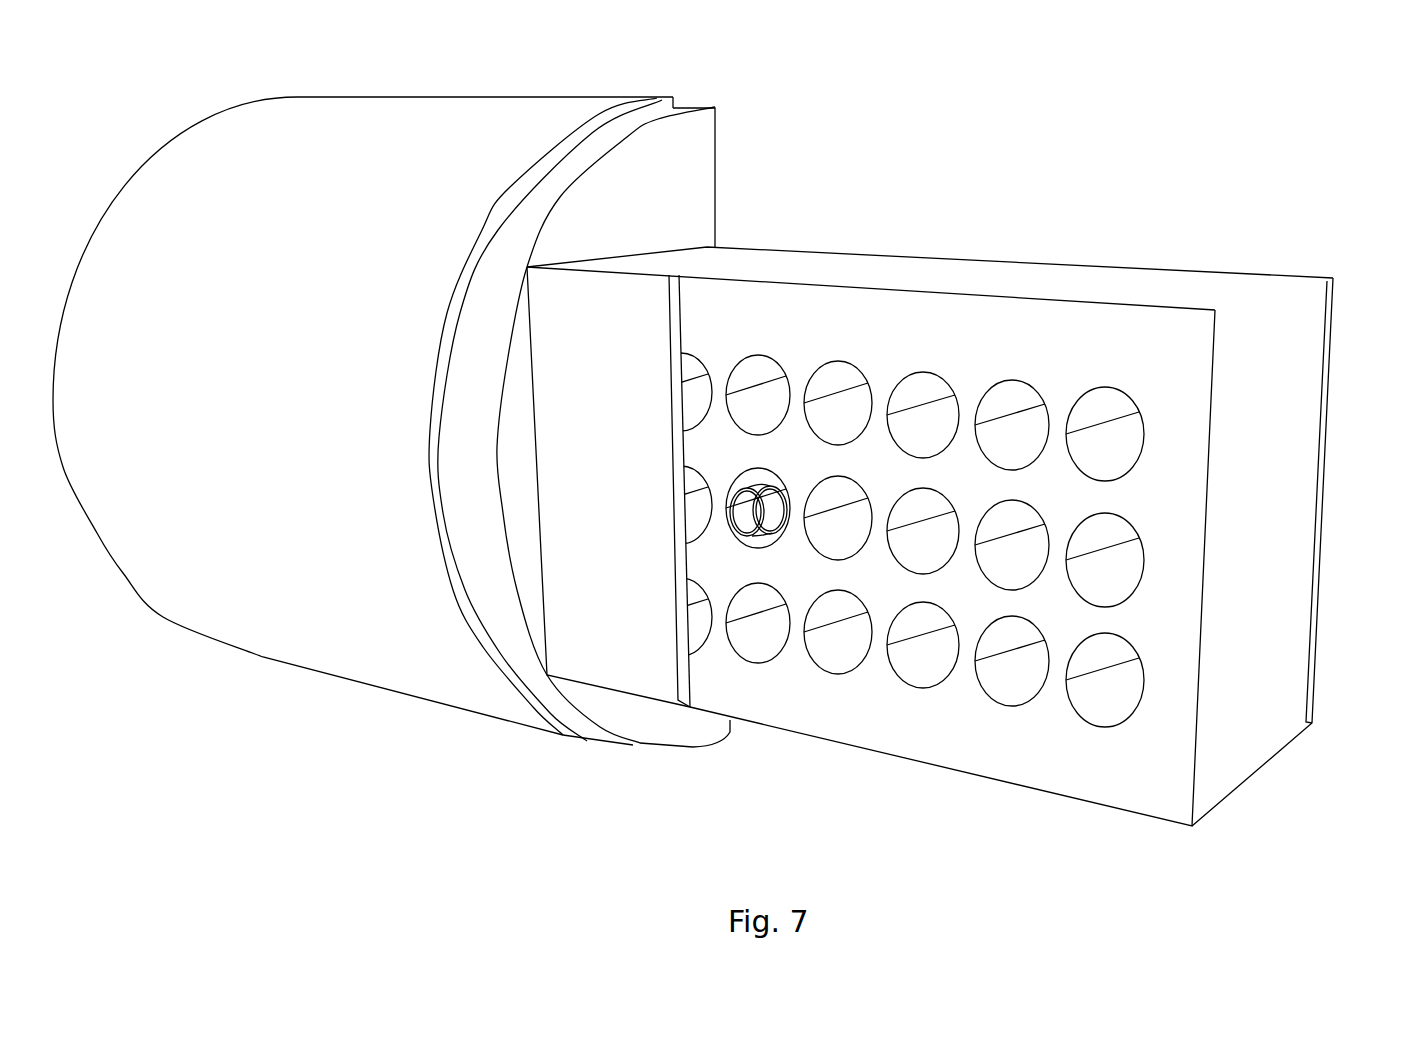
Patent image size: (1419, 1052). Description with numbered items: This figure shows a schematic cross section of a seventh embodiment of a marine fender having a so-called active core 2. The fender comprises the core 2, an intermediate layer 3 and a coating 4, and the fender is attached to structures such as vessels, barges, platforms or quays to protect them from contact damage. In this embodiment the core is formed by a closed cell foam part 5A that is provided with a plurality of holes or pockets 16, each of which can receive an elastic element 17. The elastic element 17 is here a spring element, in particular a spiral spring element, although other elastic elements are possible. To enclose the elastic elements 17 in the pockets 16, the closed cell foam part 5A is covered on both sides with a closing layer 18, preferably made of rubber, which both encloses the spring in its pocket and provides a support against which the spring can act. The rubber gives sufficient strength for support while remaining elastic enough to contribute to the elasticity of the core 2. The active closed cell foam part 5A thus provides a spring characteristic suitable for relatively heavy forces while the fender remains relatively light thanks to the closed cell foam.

The core 2 is at (700, 130).
The intermediate layer 3 is at (628, 123).
The coating 4 is at (562, 112).
The closed cell foam part 5A is at (1279, 427).
The holes or pockets 16 is at (1105, 432).
The elastic element 17 is at (770, 535).
The closing layer 18 is at (645, 293).